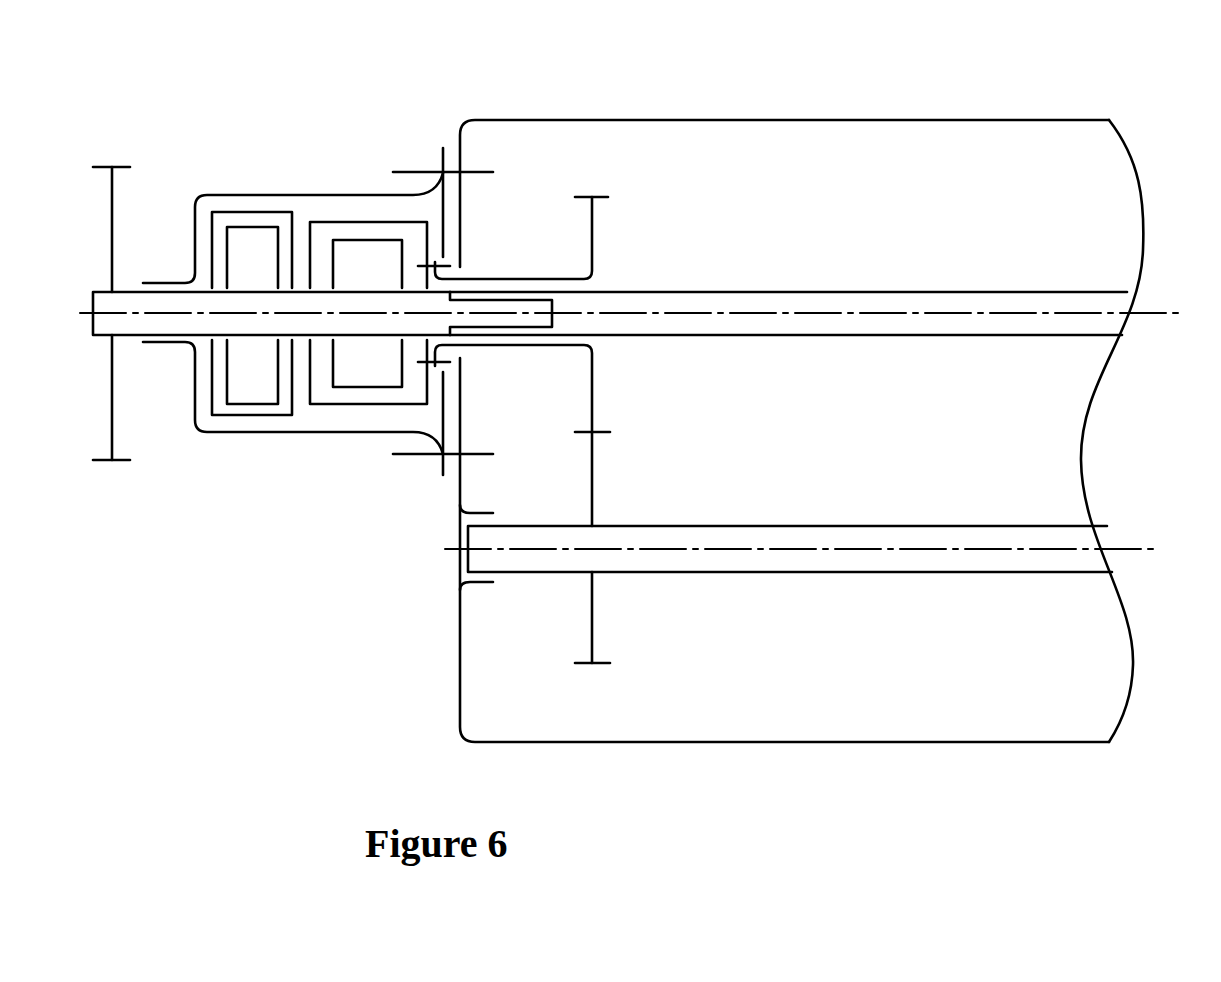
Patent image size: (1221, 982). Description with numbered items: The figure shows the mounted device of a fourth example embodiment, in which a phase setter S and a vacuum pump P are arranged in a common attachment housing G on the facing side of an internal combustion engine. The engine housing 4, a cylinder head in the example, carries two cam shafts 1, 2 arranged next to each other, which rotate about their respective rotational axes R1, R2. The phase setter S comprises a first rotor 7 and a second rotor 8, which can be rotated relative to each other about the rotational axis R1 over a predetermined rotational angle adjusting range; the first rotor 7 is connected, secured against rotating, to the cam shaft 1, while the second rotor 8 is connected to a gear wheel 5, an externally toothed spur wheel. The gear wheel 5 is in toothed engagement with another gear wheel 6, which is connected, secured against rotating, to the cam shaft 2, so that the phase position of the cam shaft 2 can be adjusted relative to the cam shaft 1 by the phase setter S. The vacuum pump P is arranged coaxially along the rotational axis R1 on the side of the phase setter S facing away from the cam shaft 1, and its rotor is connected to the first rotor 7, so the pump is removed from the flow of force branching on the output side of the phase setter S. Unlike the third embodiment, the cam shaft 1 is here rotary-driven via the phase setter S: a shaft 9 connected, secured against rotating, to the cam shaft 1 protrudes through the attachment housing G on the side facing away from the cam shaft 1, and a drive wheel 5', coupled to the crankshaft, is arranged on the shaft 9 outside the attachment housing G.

The cam shaft 1 is at (832, 300).
The cam shaft 2 is at (815, 565).
The engine housing 4 is at (758, 120).
The gear wheel 5 is at (542, 157).
The drive wheel 5' is at (156, 248).
The gear wheel 6 is at (593, 640).
The first rotor 7 is at (347, 257).
The second rotor 8 is at (367, 232).
The shaft 9 is at (126, 302).
The vacuum pump P is at (242, 422).
The attachment housing G is at (320, 433).
The phase setter S is at (368, 334).
The rotational axis R1 is at (885, 335).
The rotational axis R2 is at (918, 550).